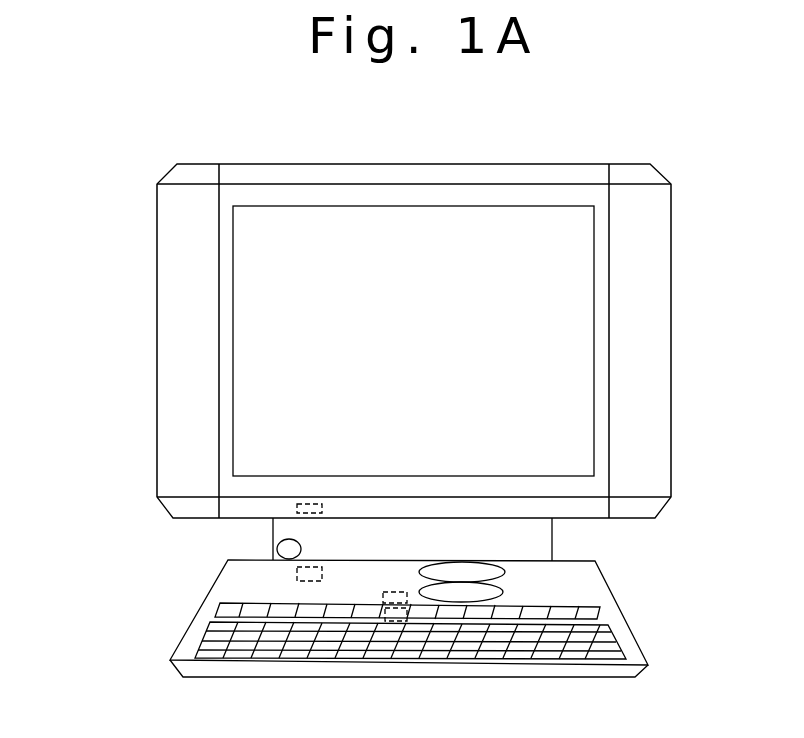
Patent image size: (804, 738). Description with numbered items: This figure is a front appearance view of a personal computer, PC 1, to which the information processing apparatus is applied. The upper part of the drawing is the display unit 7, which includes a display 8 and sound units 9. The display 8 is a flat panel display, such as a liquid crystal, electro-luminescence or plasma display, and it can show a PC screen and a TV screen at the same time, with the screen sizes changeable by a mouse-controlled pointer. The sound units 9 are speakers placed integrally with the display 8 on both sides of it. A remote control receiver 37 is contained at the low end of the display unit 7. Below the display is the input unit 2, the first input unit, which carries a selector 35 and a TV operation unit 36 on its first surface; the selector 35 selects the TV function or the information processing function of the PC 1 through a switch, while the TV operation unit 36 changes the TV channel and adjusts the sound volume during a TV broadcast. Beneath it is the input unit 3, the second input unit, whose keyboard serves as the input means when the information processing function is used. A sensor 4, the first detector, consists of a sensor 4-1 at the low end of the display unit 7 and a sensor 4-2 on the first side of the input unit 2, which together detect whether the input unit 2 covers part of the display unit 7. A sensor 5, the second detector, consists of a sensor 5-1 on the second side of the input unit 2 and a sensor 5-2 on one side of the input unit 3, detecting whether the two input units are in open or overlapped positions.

The PC 1 is at (738, 141).
The input unit (first input unit) 2 is at (223, 572).
The input unit (second input unit) 3 is at (179, 618).
The sensor (first detector) 4 is at (90, 432).
The sensor 4-1 is at (297, 509).
The sensor 4-2 is at (297, 576).
The sensor (second detector) 5 is at (300, 683).
The sensor 5-1 is at (385, 604).
The sensor 5-2 is at (383, 622).
The display unit 7 is at (243, 193).
The display 8 is at (405, 245).
The sound units 9 is at (167, 289).
The selector 35 is at (503, 566).
The TV operation unit 36 is at (503, 590).
The remote control receiver 37 is at (301, 547).